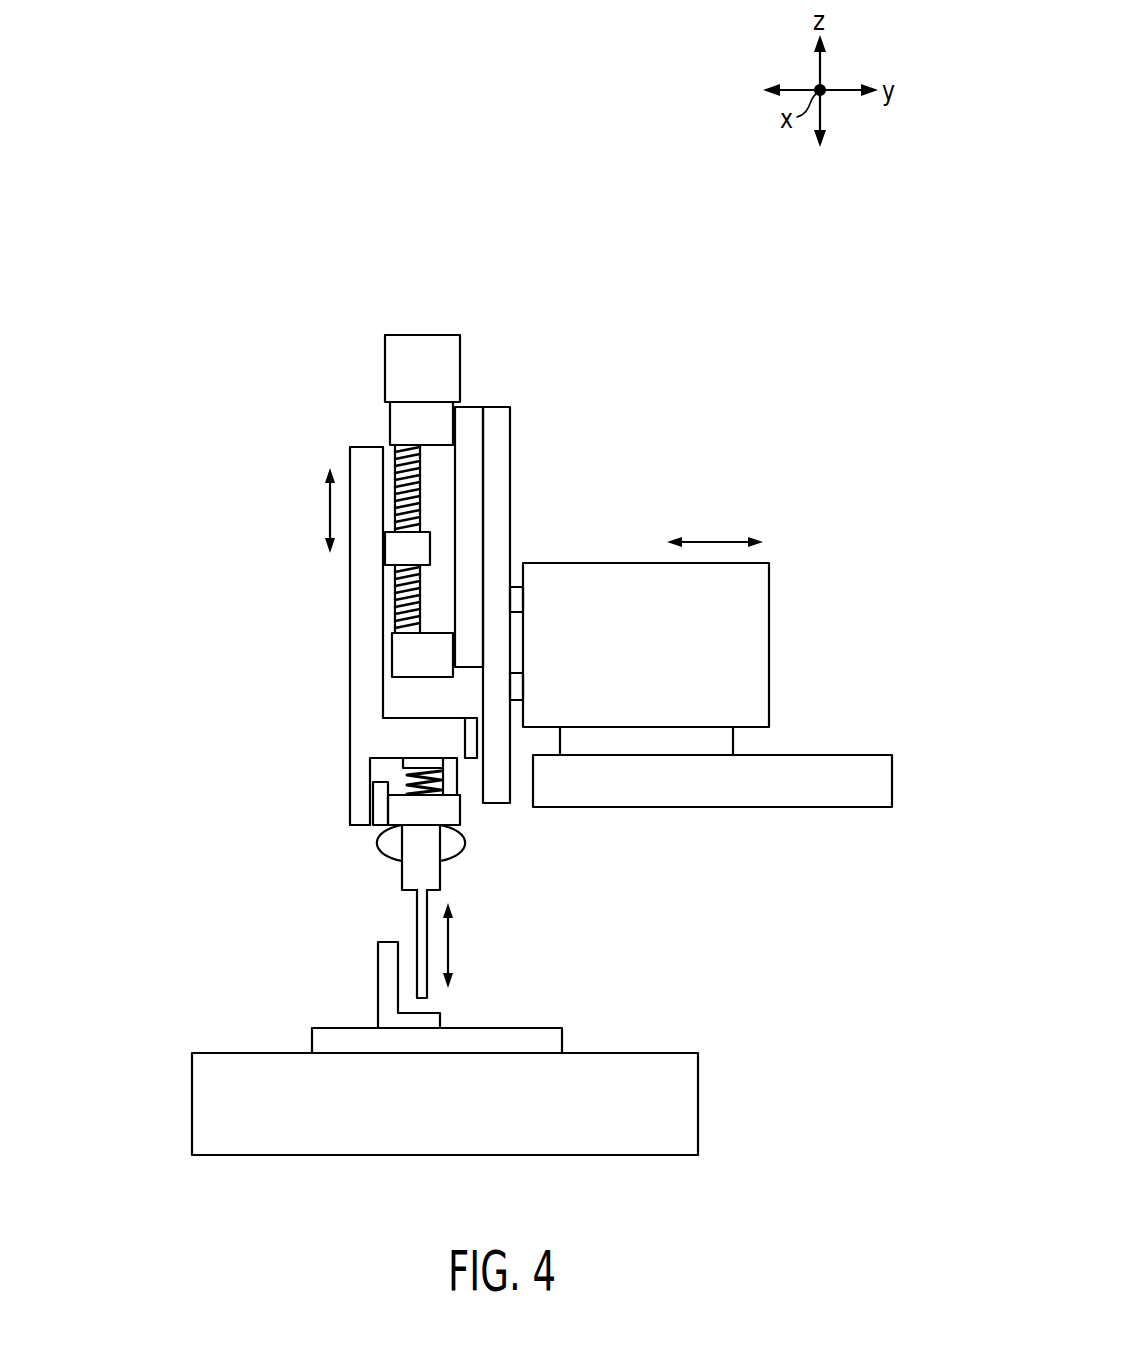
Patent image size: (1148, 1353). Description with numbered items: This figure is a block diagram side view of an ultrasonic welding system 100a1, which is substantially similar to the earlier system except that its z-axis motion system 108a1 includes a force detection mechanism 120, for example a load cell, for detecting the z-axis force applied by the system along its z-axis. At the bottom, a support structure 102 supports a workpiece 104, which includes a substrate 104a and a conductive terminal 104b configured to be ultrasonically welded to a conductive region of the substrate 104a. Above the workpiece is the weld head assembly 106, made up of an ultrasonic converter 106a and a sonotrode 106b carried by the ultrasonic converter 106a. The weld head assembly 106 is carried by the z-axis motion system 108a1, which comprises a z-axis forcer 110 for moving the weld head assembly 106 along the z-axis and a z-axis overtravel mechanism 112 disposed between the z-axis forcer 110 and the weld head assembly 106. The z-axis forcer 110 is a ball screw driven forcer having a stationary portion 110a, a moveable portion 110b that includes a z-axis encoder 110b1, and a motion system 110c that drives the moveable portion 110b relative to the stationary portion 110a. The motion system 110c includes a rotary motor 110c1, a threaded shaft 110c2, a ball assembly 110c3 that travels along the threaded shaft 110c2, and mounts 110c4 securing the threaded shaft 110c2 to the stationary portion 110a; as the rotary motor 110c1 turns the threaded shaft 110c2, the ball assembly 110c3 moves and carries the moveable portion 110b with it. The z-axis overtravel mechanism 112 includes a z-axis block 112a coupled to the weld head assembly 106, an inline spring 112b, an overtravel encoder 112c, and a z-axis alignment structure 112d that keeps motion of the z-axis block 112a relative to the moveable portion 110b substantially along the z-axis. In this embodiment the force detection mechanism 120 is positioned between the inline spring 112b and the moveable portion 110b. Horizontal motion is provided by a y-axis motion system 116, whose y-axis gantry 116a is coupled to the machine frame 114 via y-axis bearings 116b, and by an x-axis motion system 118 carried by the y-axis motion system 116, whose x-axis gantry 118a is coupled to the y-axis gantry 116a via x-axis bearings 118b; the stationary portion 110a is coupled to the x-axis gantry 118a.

The ultrasonic welding system 100a1 is at (670, 300).
The support structure 102 is at (698, 1112).
The workpiece 104 is at (295, 1015).
The substrate 104a is at (562, 1038).
The conductive terminal 104b is at (378, 978).
The weld head assembly 106 is at (466, 886).
The ultrasonic converter 106a is at (413, 873).
The sonotrode 106b is at (415, 928).
The z-axis motion system 108a1 is at (290, 371).
The z-axis forcer 110 is at (273, 468).
The stationary portion 110a is at (482, 462).
The moveable portion 110b is at (350, 620).
The z-axis encoder 110b1 is at (465, 740).
The motion system 110c is at (471, 300).
The rotary motor 110c1 is at (415, 335).
The threaded shaft 110c2 is at (395, 505).
The ball assembly 110c3 is at (385, 550).
The mounts 110c4 is at (390, 415).
The z-axis overtravel mechanism 112 is at (484, 847).
The z-axis block 112a is at (425, 815).
The inline spring 112b is at (415, 762).
The overtravel encoder 112c is at (380, 805).
The z-axis alignment structure 112d is at (468, 806).
The machine frame 114 is at (820, 807).
The y-axis motion system 116 is at (810, 568).
The y-axis gantry 116a is at (769, 643).
The y-axis bearings 116b is at (733, 742).
The x-axis motion system 118 is at (548, 492).
The x-axis gantry 118a is at (510, 420).
The x-axis bearings 118b is at (520, 686).
The force detection mechanism 120 is at (383, 770).